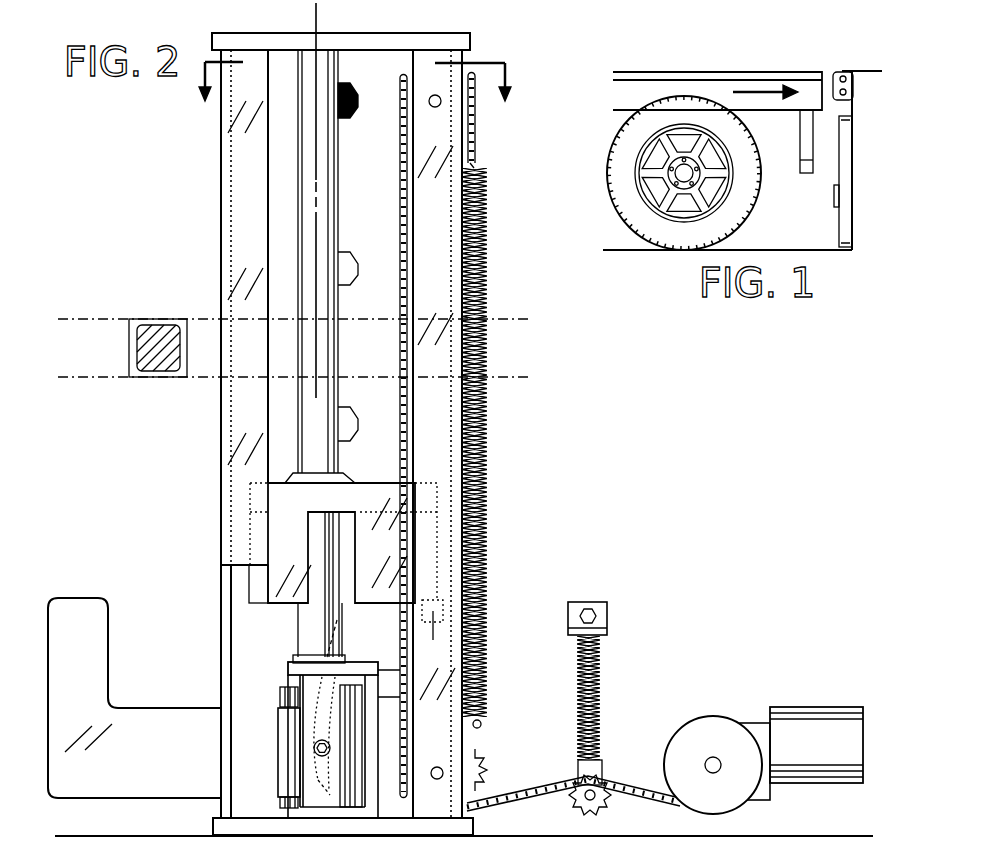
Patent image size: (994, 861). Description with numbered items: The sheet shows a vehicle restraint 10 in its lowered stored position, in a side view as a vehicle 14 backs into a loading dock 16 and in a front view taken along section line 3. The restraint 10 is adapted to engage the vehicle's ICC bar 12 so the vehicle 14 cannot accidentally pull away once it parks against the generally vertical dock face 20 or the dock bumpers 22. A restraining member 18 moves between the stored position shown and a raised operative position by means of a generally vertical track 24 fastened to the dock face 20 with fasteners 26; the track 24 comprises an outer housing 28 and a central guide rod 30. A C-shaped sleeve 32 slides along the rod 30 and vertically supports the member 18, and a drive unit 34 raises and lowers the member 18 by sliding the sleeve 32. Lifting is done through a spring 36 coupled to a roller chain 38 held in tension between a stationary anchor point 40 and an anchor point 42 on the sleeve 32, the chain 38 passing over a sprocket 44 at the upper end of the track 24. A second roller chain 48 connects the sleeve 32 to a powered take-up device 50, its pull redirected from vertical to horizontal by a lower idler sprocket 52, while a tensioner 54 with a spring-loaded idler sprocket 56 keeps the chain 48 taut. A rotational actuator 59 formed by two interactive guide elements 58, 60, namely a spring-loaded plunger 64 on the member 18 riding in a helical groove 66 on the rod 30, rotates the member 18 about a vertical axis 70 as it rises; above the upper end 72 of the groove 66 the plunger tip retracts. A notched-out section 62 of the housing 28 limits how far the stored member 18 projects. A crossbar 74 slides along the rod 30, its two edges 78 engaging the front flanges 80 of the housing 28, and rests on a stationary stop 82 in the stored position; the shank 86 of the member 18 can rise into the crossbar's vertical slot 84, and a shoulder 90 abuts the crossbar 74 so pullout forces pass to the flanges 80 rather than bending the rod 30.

In FIG. 2, the section line 3- 3 is at (355, 96).
In FIG. 2, the vehicle restraint 10 is at (543, 414).
In FIG. 1, the ICC bar 12 is at (798, 165).
In FIG. 2, the ICC bar 12 is at (108, 318).
In FIG. 1, the vehicle 14 is at (707, 71).
In FIG. 1, the loading dock 16 is at (879, 70).
In FIG. 2, the restraining member 18 is at (112, 763).
In FIG. 1, the dock face 20 is at (850, 226).
In FIG. 1, the dock bumpers 22 is at (835, 72).
In FIG. 1, the vertical track 24 is at (848, 155).
In FIG. 2, the vertical track 24 is at (219, 222).
In FIG. 2, the fasteners 26 is at (352, 258).
In FIG. 2, the outer housing 28 is at (221, 301).
In FIG. 2, the central guide rod 30 is at (338, 209).
In FIG. 2, the C-shaped sleeve 32 is at (290, 666).
In FIG. 2, the drive unit 34 is at (714, 638).
In FIG. 2, the spring 36 is at (487, 311).
In FIG. 2, the roller chain 38 is at (478, 157).
In FIG. 2, the stationary anchor point 40 is at (483, 727).
In FIG. 2, the anchor point 42 is at (400, 670).
In FIG. 2, the sprocket 44 is at (466, 105).
In FIG. 2, the roller chain 48 is at (522, 790).
In FIG. 2, the powered take-up device 50 is at (695, 718).
In FIG. 2, the lower idler sprocket 52 is at (490, 790).
In FIG. 2, the tensioner 54 is at (602, 763).
In FIG. 2, the spring-loaded idler sprocket 56 is at (598, 808).
In FIG. 2, the guide element 58 is at (312, 758).
In FIG. 2, the rotational actuator 59 is at (292, 750).
In FIG. 2, the guide element 60 is at (310, 716).
In FIG. 2, the notched-out section 62 is at (242, 567).
In FIG. 2, the spring-loaded plunger 64 is at (327, 742).
In FIG. 2, the helical groove 66 is at (290, 697).
In FIG. 2, the vertical axis 70 is at (315, 253).
In FIG. 2, the upper end 72 is at (338, 622).
In FIG. 1, the crossbar 74 is at (833, 194).
In FIG. 2, the crossbar 74 is at (367, 497).
In FIG. 2, the edges 78 is at (259, 590).
In FIG. 2, the front flanges 80 is at (258, 402).
In FIG. 2, the stationary stop 82 is at (432, 632).
In FIG. 2, the vertical slot 84 is at (313, 543).
In FIG. 2, the shank 86 is at (177, 706).
In FIG. 2, the shoulder 90 is at (277, 780).